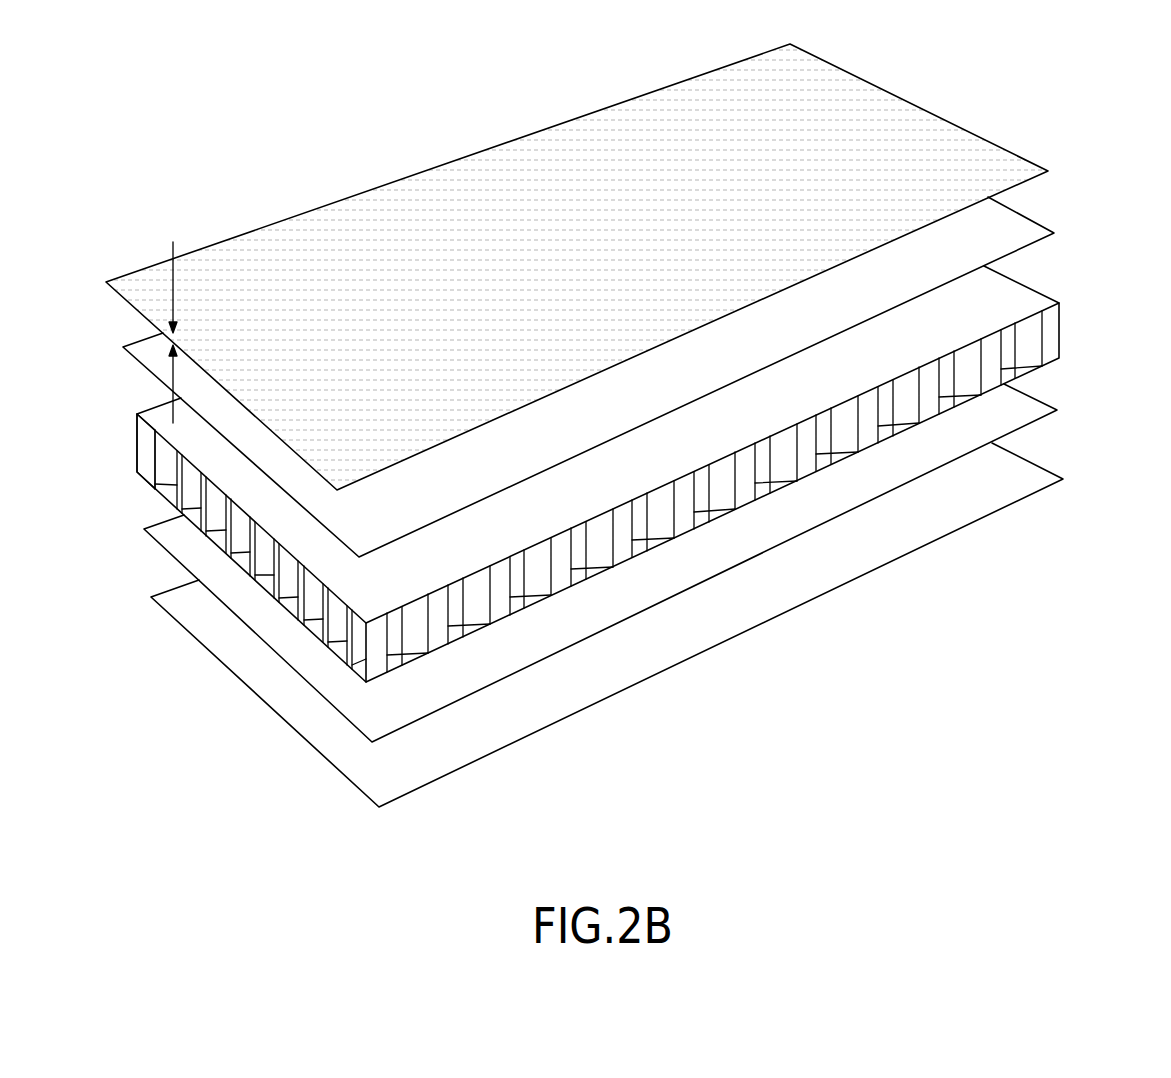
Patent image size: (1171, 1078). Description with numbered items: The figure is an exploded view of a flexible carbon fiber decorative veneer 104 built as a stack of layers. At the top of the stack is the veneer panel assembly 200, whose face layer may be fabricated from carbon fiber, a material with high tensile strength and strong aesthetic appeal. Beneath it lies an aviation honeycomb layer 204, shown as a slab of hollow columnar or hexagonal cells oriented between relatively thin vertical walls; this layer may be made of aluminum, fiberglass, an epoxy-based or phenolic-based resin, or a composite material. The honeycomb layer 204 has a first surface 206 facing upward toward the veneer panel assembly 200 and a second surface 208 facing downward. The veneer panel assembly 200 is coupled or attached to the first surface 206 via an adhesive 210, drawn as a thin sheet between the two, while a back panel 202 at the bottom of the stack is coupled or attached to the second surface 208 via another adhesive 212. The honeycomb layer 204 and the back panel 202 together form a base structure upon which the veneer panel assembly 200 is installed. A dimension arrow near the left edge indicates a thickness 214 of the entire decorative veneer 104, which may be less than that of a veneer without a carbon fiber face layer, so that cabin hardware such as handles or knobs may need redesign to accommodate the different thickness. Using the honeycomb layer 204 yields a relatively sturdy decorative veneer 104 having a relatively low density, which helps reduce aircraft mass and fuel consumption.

The decorative veneer 104 is at (95, 93).
The veneer panel assembly 200 is at (312, 210).
The adhesive 210 is at (1002, 232).
The thickness 214 is at (172, 380).
The first surface 206 is at (1015, 303).
The aviation honeycomb layer 204 is at (138, 445).
The second surface 208 is at (1052, 335).
The adhesive 212 is at (1027, 408).
The back panel 202 is at (182, 600).